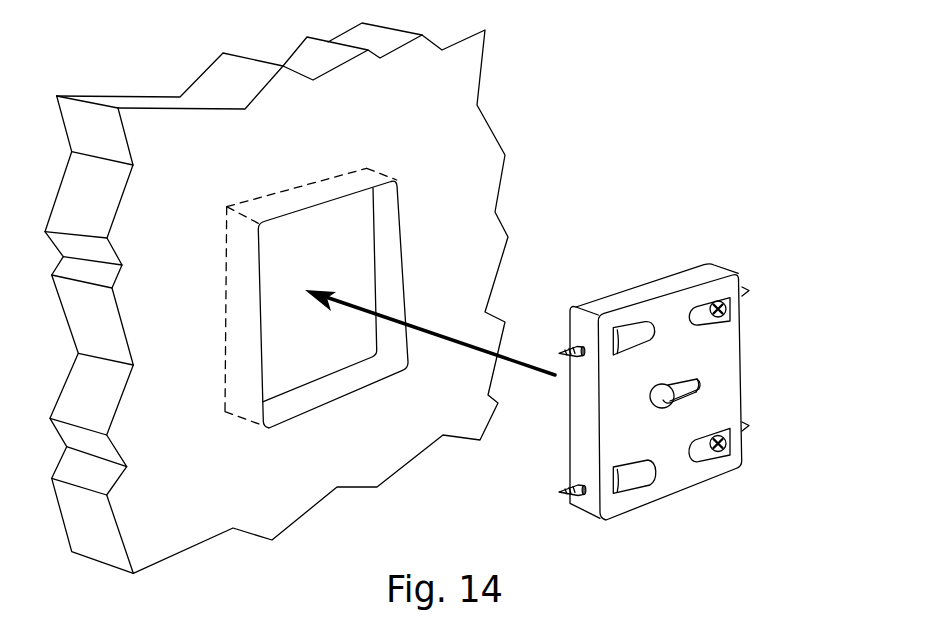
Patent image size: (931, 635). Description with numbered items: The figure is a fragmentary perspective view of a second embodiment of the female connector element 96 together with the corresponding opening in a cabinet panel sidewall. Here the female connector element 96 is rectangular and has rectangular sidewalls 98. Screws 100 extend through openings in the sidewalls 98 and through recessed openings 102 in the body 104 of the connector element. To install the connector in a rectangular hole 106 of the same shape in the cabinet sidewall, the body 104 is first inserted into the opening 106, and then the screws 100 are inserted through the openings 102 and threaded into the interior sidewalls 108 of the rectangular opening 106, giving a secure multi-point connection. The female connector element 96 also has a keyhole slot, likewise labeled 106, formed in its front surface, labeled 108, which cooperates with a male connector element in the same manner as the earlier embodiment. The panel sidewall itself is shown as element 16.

The wall 16 is at (252, 133).
The female connector element 96 is at (621, 280).
The rectangular sidewalls 98 is at (578, 425).
The screws 100 is at (568, 346).
The recessed openings 102 is at (645, 328).
The body 104 is at (703, 353).
The rectangular hole 106 is at (421, 243).
The interior sidewalls 108 is at (393, 212).